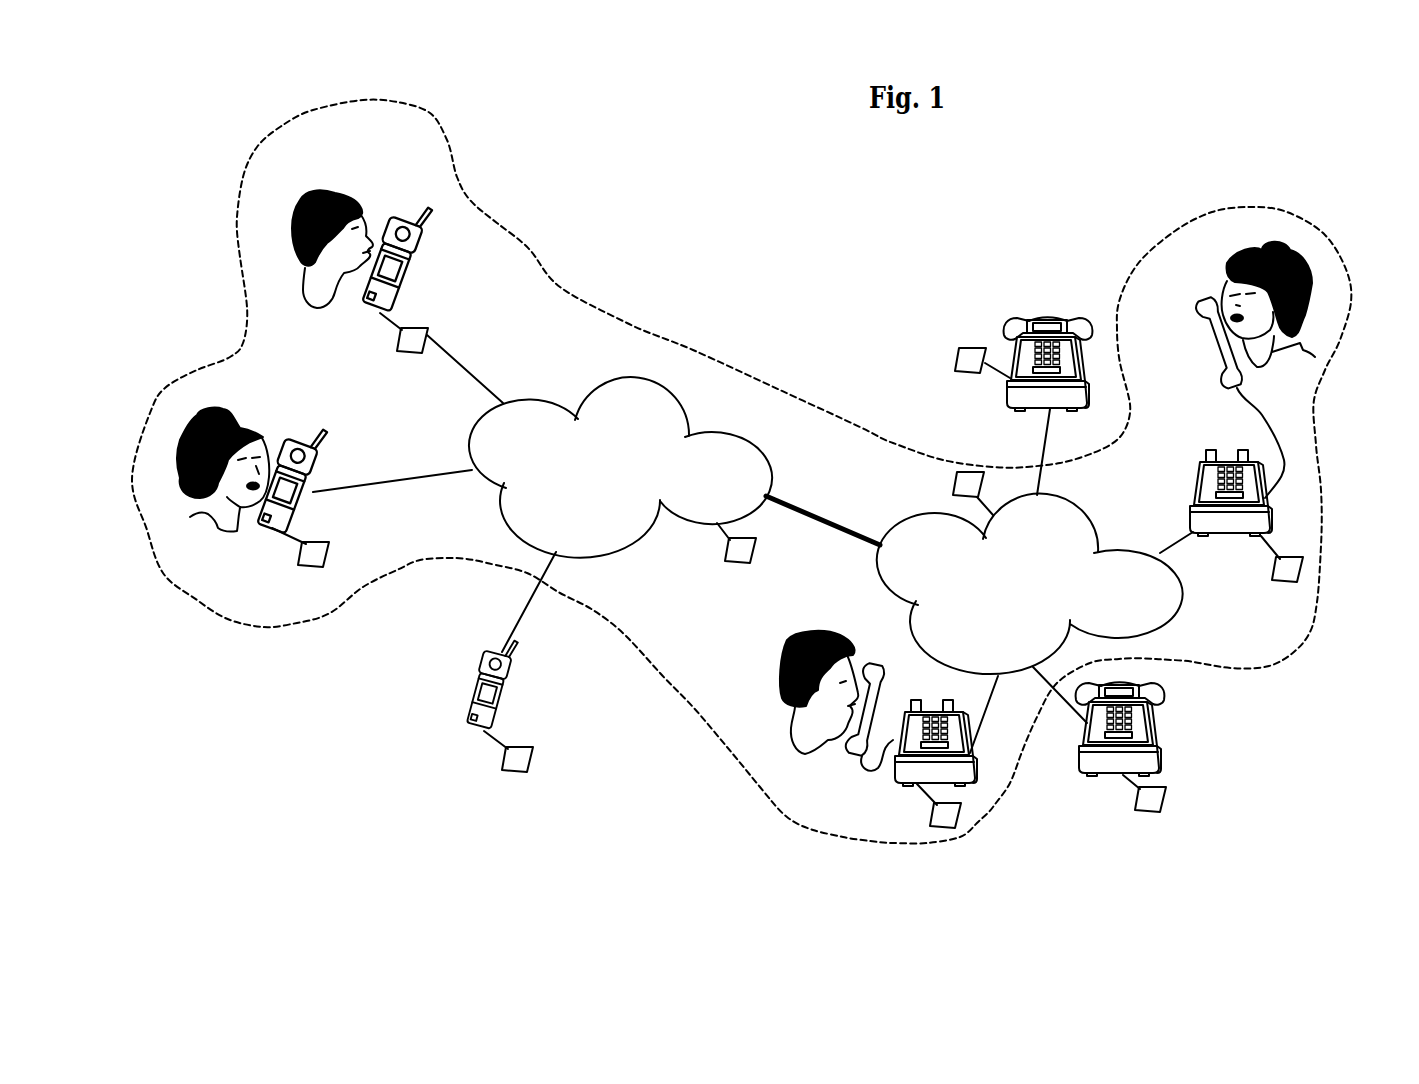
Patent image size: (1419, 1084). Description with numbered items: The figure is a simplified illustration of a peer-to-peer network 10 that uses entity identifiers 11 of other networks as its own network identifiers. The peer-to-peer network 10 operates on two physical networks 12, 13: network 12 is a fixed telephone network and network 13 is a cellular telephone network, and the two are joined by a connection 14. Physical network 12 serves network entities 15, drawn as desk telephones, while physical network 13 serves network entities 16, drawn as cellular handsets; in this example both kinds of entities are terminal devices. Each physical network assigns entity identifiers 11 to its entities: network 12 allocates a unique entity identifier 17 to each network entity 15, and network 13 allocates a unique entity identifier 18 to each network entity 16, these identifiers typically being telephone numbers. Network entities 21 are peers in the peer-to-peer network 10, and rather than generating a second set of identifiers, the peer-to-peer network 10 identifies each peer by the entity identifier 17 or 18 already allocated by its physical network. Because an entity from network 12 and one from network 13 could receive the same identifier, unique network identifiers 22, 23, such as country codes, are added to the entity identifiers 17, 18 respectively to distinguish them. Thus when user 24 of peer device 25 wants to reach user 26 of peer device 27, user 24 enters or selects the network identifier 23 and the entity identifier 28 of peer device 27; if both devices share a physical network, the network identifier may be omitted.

The peer-to-peer network 10 is at (624, 324).
The entity identifiers 11 is at (802, 607).
The physical network 12 is at (911, 606).
The physical network 13 is at (771, 475).
The connection 14 is at (812, 516).
The network entities 15 is at (1057, 535).
The network entities 16 is at (417, 262).
The entity identifier 17 is at (970, 376).
The entity identifier 18 is at (413, 577).
The network entities 21 is at (763, 486).
The network identifier 22 is at (956, 483).
The network identifier 23 is at (741, 567).
The user 24 is at (780, 667).
The peer device 25 is at (972, 776).
The user 26 is at (222, 516).
The peer device 27 is at (266, 539).
The entity identifier 28 is at (330, 556).